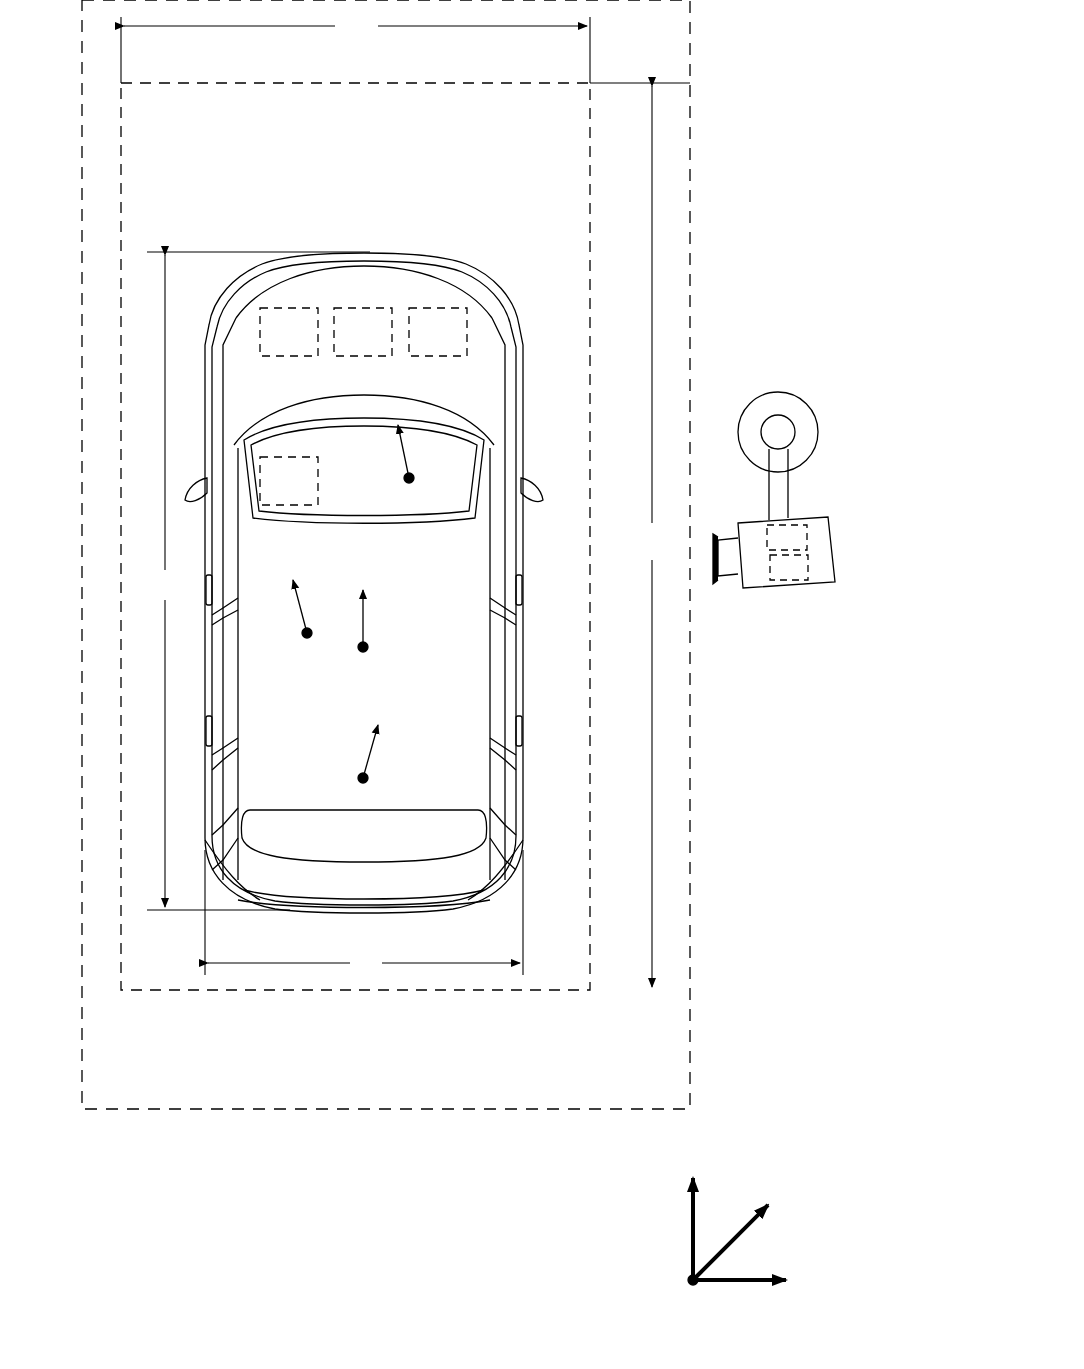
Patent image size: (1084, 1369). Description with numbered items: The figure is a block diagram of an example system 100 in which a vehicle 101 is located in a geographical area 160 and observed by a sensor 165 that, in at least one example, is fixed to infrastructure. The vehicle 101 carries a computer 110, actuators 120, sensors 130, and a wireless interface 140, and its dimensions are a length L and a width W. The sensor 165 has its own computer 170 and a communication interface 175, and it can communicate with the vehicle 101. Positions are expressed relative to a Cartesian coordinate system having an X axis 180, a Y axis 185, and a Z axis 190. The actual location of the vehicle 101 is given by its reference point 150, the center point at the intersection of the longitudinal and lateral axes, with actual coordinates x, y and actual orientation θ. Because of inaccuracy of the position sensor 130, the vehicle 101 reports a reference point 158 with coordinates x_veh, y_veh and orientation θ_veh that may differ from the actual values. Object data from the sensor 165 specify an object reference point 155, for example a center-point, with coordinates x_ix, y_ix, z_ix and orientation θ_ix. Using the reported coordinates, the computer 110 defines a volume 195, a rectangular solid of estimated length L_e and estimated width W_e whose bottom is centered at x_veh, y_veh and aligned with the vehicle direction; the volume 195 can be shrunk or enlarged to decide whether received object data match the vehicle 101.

The system 100 is at (868, 177).
The vehicle 101 is at (332, 913).
The computer 110 is at (289, 332).
The actuator 120 is at (363, 332).
The sensor 130 is at (438, 332).
The wireless interface 140 is at (289, 481).
The reference point 150 is at (368, 648).
The reference point 155 is at (369, 777).
The reference point 158 is at (414, 476).
The geographical area 160 is at (170, 1110).
The sensor 165 is at (819, 500).
The computer 170 is at (808, 567).
The communication interface 175 is at (807, 538).
The X axis 180 is at (733, 1283).
The Y axis 185 is at (735, 1242).
The Z axis 190 is at (693, 1228).
The volume 195 is at (490, 83).